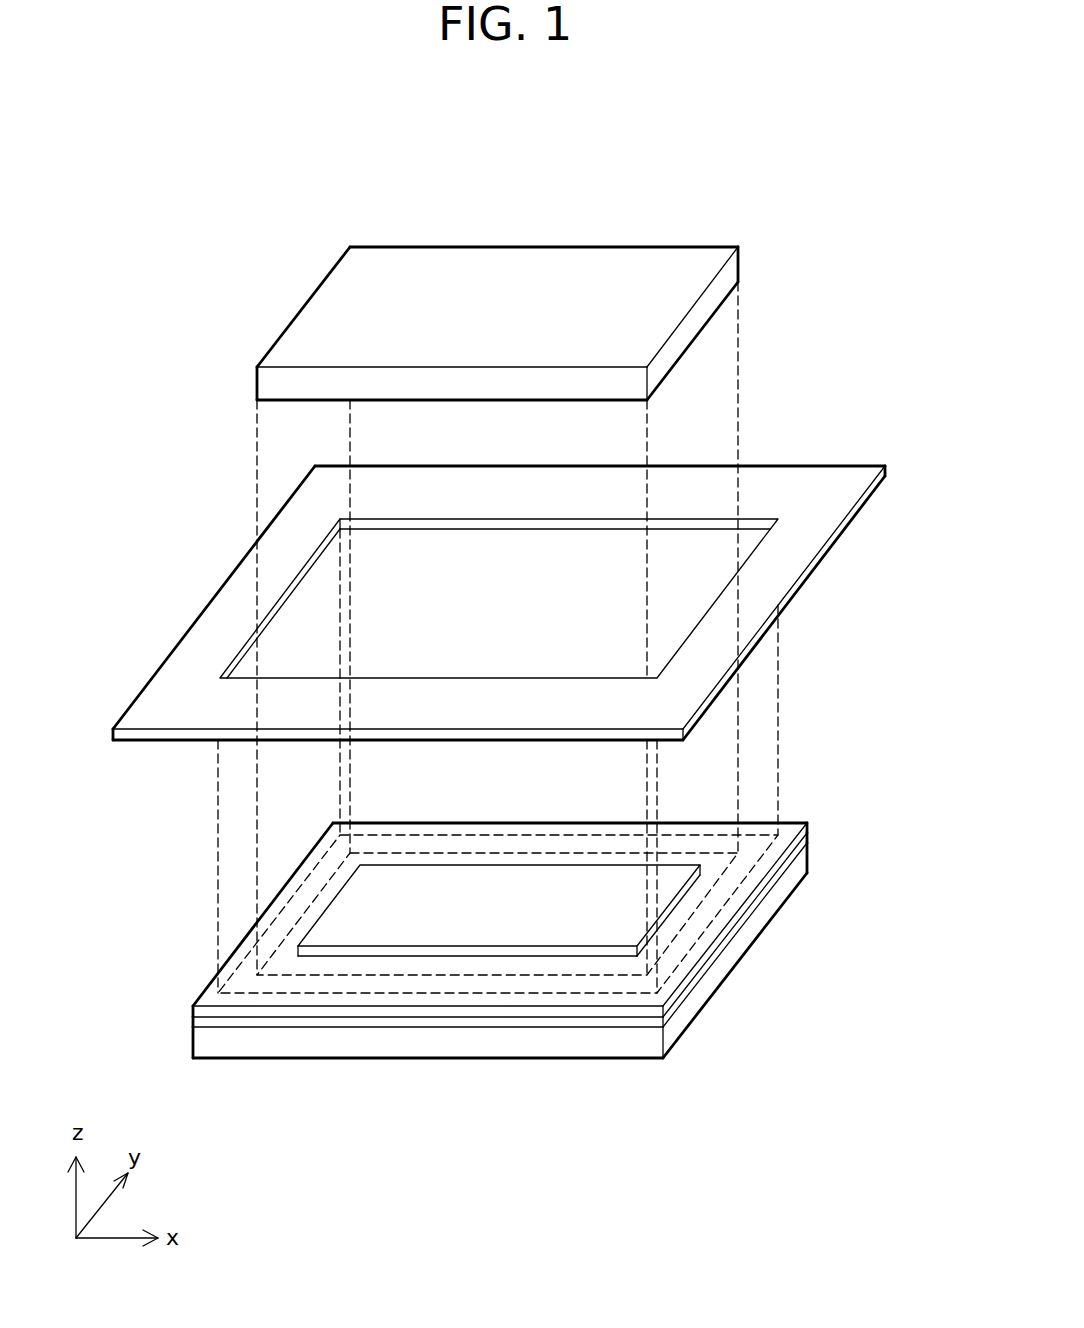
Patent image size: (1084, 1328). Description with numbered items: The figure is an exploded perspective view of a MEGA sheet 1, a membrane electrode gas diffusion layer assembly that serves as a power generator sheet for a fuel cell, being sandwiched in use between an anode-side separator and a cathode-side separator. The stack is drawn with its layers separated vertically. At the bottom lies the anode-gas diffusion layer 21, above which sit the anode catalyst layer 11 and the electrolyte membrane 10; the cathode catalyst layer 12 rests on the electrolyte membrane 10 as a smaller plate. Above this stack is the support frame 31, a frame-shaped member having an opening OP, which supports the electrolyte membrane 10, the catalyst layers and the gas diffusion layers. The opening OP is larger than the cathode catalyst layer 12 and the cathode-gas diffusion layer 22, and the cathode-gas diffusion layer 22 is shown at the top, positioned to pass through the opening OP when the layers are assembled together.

The MEGA sheet 1 is at (858, 105).
The cathode-gas diffusion layer 22 is at (651, 268).
The support frame 31 is at (521, 678).
The opening OP is at (684, 637).
The electrolyte membrane 10 is at (809, 826).
The anode catalyst layer 11 is at (809, 838).
The anode-gas diffusion layer 21 is at (809, 862).
The cathode catalyst layer 12 is at (482, 917).